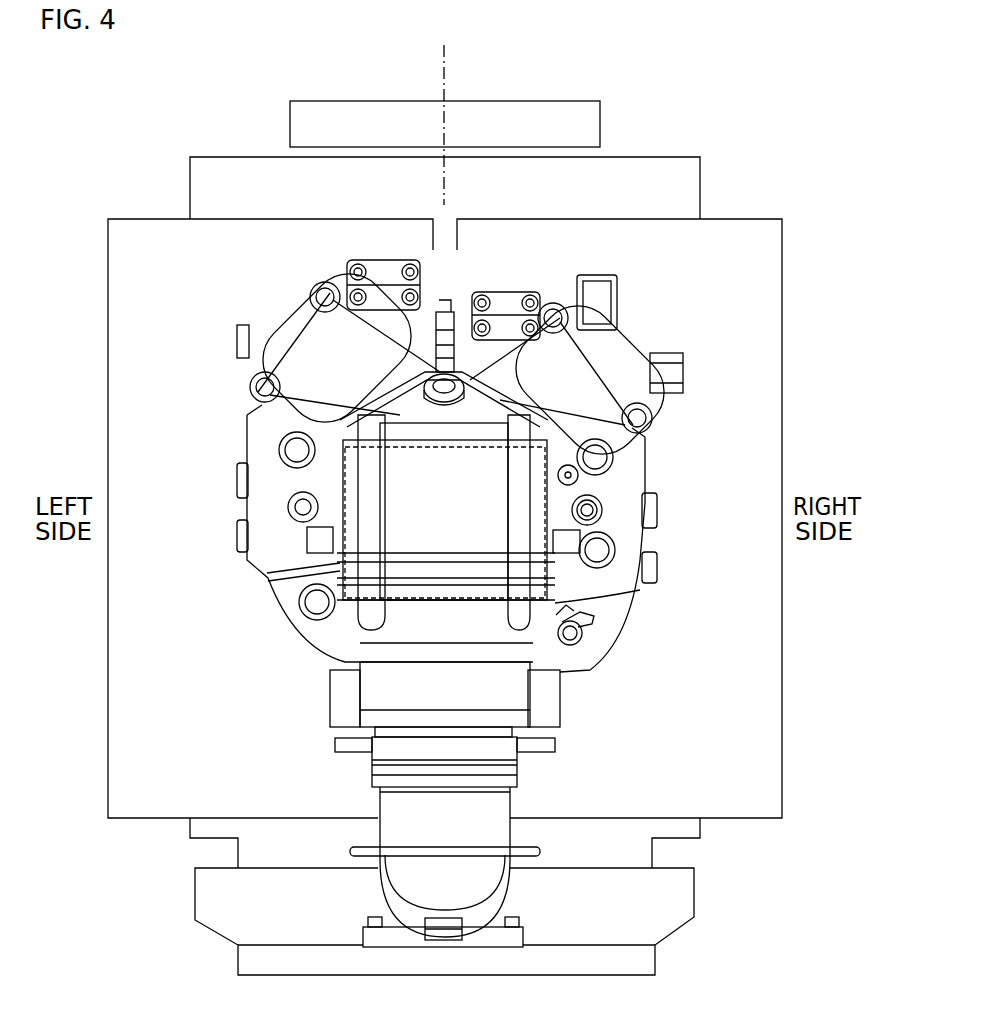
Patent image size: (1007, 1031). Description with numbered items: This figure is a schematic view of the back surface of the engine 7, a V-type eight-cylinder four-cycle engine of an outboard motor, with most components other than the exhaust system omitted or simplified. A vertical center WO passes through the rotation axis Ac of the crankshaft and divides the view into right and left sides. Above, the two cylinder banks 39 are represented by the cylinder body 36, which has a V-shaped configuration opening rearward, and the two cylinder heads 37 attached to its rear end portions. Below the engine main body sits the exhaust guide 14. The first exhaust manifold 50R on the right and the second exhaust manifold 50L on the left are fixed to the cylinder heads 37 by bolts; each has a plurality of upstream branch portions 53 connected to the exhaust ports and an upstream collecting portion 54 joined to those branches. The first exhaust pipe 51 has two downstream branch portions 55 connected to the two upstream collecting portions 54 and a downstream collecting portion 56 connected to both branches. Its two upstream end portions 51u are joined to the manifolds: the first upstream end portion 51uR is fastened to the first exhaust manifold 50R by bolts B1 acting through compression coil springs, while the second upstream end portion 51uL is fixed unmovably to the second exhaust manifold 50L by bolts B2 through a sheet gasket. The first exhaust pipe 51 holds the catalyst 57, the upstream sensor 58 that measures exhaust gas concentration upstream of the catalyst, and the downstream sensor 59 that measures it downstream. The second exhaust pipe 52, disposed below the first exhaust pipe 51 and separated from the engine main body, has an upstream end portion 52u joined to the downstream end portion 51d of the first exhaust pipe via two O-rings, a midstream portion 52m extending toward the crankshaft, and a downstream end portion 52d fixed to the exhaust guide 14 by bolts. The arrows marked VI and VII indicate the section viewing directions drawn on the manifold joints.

The engine 7 is at (176, 110).
The exhaust guide 14 is at (194, 890).
The cylinder body 36 is at (654, 158).
The cylinder heads 37 is at (151, 226).
The cylinder banks 39 is at (116, 156).
The rotation axis Ac is at (441, 87).
The center WO is at (447, 55).
The second exhaust manifold 50L is at (247, 438).
The first exhaust manifold 50R is at (646, 470).
The first exhaust pipe 51 is at (620, 346).
The upstream end portions 51u is at (477, 354).
The second upstream end portion 51uL is at (258, 318).
The first upstream end portion 51uR is at (640, 346).
The downstream end portion 51d is at (544, 712).
The second exhaust pipe 52 is at (512, 803).
The upstream end portion 52u is at (505, 755).
The midstream portion 52m is at (500, 830).
The downstream end portion 52d is at (530, 938).
The upstream branch portions 53 is at (392, 268).
The upstream collecting portion 54 is at (268, 508).
The downstream branch portions 55 is at (258, 348).
The downstream collecting portion 56 is at (385, 683).
The catalyst 57 is at (604, 512).
The upstream sensor 58 is at (468, 374).
The downstream sensor 59 is at (588, 640).
The bolts B1 is at (553, 303).
The bolts B2 is at (330, 312).
The section line VI is at (521, 275).
The section line VII is at (340, 280).